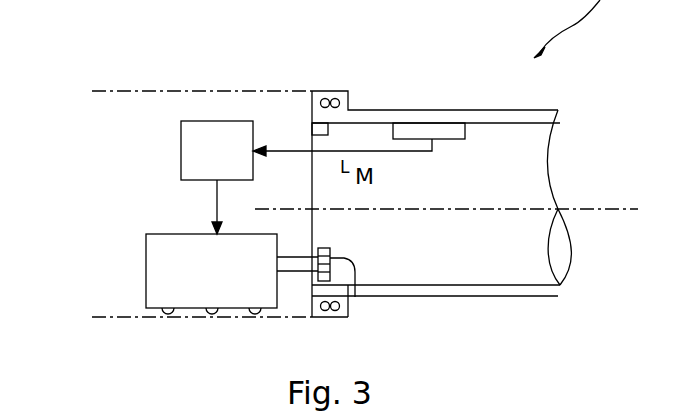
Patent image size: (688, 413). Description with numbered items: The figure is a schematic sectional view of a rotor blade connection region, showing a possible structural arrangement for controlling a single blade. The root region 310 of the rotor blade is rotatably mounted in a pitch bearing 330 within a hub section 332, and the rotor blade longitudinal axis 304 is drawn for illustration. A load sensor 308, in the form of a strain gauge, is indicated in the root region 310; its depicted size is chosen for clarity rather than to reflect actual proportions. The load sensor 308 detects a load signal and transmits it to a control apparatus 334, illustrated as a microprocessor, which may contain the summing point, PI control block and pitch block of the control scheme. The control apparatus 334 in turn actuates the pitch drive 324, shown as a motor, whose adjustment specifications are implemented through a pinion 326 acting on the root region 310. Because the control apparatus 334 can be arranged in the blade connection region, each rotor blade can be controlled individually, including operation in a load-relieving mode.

The rotor blade longitudinal axis 304 is at (592, 209).
The load sensor 308 is at (448, 123).
The root region 310 is at (488, 296).
The pitch drive 324 is at (146, 234).
The pinion 326 is at (355, 297).
The pitch bearing 330 is at (336, 97).
The hub section 332 is at (198, 91).
The control apparatus 334 is at (181, 141).